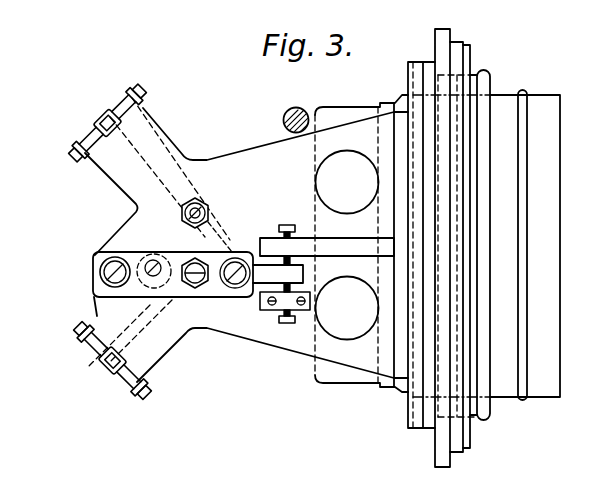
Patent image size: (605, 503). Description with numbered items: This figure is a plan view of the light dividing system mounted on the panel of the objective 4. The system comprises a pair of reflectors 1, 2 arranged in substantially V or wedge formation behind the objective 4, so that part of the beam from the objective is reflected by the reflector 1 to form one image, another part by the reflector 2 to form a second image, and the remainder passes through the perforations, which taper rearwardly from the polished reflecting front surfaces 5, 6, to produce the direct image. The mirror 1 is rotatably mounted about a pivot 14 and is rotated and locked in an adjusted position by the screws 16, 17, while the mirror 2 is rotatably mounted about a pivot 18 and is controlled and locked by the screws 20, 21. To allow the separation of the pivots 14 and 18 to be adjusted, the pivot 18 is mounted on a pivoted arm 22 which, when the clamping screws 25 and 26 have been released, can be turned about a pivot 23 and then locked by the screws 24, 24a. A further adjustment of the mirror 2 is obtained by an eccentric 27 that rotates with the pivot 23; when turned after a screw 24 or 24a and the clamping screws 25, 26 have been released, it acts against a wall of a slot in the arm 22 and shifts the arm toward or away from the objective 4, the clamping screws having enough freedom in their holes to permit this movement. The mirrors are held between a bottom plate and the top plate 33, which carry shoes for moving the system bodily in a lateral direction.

The reflector 1 is at (177, 140).
The reflector 2 is at (150, 308).
The objective 4 is at (508, 380).
The polished reflecting front surface 5 is at (223, 240).
The polished reflecting front surface 6 is at (152, 328).
The pivot 14 is at (201, 205).
The screw 16 is at (152, 90).
The screw 17 is at (70, 160).
The pivot 18 is at (192, 290).
The screw 20 is at (100, 323).
The screw 21 is at (140, 395).
The pivoted arm 22 is at (173, 254).
The pivot 23 is at (148, 263).
The screw 24 is at (296, 230).
The screw 24a is at (293, 287).
The clamping screw 25 is at (103, 267).
The clamping screw 26 is at (258, 237).
The eccentric 27 is at (92, 302).
The top plate 33 is at (278, 324).